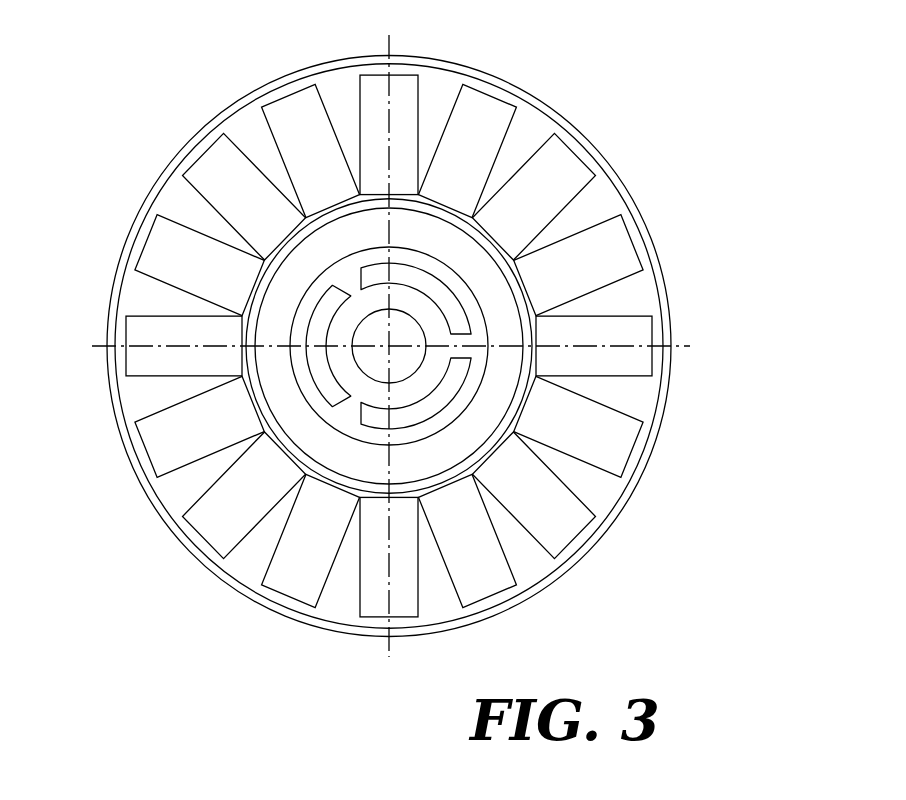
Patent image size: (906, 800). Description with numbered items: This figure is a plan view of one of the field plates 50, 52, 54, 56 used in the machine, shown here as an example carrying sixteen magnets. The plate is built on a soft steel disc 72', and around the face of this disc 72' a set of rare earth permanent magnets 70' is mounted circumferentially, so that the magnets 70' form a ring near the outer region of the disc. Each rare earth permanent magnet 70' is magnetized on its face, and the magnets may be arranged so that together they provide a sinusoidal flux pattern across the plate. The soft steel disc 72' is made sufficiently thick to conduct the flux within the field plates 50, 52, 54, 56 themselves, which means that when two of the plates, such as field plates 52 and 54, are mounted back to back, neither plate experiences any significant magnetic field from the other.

The field plate 50 is at (421, 349).
The field plate 52 is at (421, 349).
The field plate 54 is at (421, 349).
The field plate 56 is at (602, 130).
The rare earth permanent magnet 70' is at (392, 349).
The soft steel disc 72' is at (398, 346).